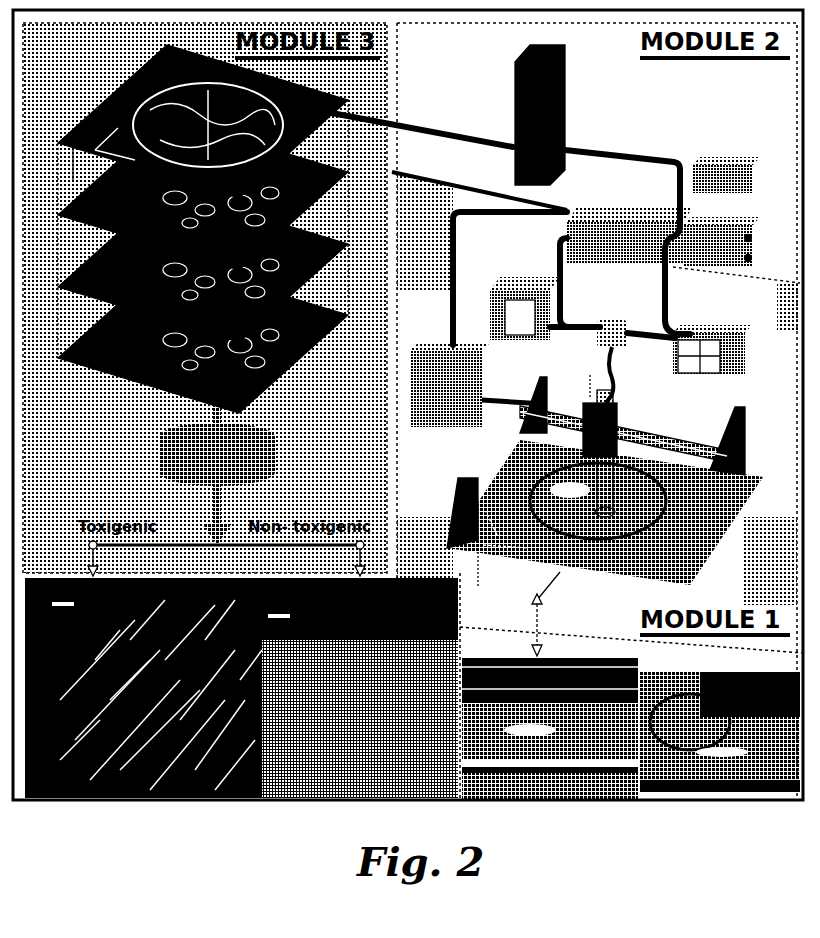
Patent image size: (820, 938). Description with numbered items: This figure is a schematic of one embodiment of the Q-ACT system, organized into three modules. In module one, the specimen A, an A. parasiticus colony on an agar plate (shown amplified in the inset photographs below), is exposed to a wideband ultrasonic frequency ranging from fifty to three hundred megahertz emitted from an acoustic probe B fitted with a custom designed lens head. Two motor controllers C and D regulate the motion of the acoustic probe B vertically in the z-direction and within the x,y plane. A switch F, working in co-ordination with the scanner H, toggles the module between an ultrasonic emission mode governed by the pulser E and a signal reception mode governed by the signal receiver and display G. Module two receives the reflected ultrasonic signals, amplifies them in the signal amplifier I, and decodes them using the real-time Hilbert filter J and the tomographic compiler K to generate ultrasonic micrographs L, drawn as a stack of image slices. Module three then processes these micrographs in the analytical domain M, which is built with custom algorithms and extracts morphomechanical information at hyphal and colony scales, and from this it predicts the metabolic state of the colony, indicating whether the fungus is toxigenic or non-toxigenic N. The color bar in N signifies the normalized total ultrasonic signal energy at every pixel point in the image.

The specimen A is at (605, 500).
The acoustic probe B is at (598, 501).
The motor controller C is at (623, 446).
The motor controller D is at (450, 385).
The pulser E is at (525, 305).
The switch F is at (612, 351).
The signal receiver and display G is at (712, 339).
The scanner H is at (630, 235).
The signal amplifier I is at (721, 242).
The real-time Hilbert filter J is at (726, 175).
The tomographic compiler K is at (540, 115).
The ultrasonic micrographs L is at (203, 229).
The analytical domain M is at (198, 454).
The toxigenic or non-toxigenic prediction N is at (241, 688).